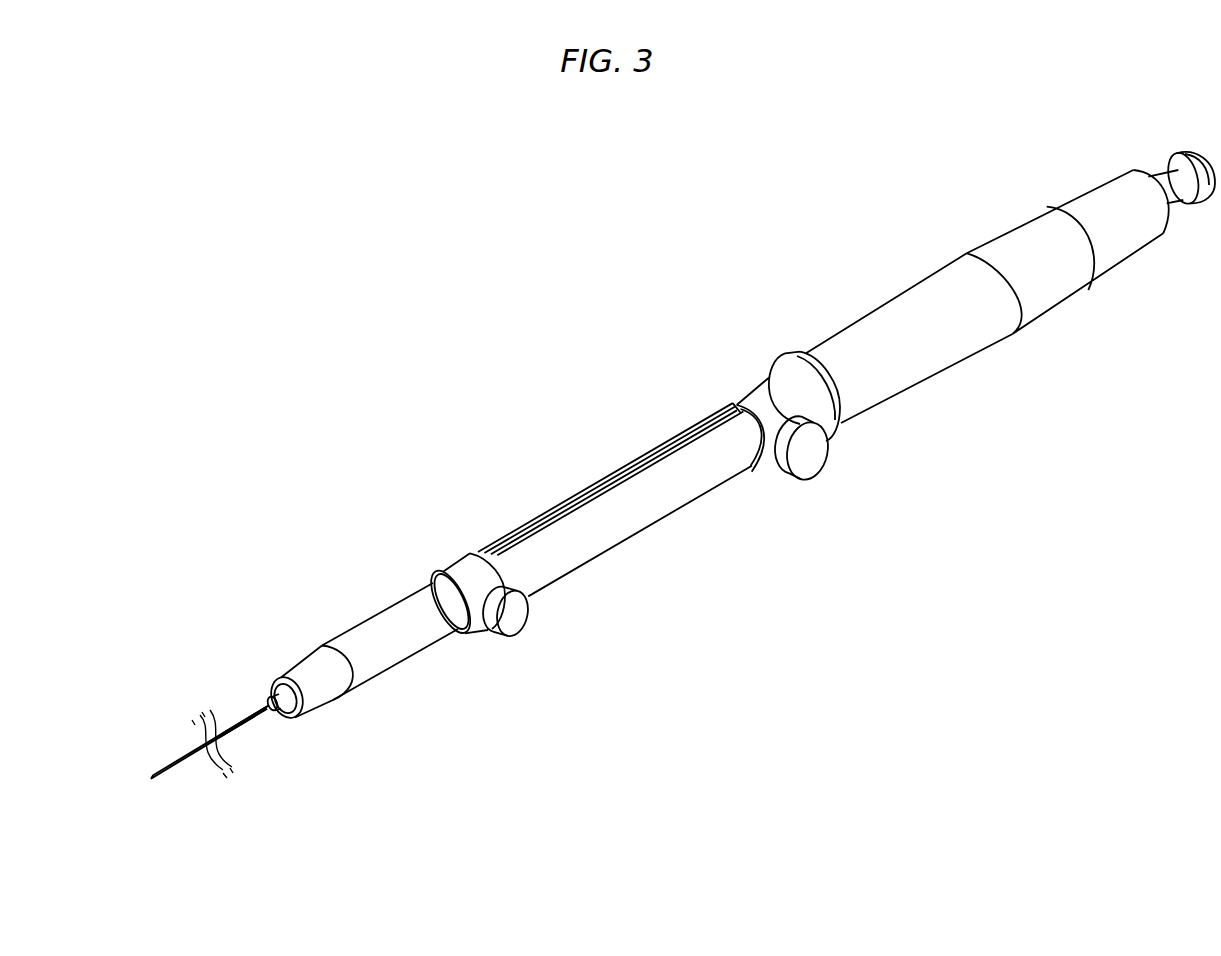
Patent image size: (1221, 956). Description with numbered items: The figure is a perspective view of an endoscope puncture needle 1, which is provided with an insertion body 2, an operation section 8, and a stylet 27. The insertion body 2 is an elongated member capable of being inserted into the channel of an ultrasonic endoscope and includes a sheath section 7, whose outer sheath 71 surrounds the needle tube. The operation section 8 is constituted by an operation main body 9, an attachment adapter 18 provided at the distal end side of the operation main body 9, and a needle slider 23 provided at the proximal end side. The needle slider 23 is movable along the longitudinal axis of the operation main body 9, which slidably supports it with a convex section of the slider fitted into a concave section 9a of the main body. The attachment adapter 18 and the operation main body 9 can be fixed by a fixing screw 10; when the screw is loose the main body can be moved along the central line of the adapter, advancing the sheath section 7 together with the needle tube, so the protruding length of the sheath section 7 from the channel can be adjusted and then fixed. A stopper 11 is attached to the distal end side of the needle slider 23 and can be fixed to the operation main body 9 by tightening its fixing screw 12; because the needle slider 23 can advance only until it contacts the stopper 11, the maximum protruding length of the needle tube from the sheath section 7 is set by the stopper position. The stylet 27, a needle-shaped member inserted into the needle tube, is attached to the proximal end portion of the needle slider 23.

The puncture needle 1 is at (531, 281).
The insertion body 2 is at (188, 671).
The sheath section 7 is at (183, 765).
The outer sheath 71 is at (242, 730).
The operation section 8 is at (792, 219).
The operation main body 9 is at (605, 540).
The concave section 9a is at (613, 487).
The fixing screw 10 is at (515, 625).
The stopper 11 is at (757, 395).
The fixing screw 12 is at (812, 462).
The attachment adapter 18 is at (388, 618).
The needle slider 23 is at (998, 240).
The stylet 27 is at (1190, 150).